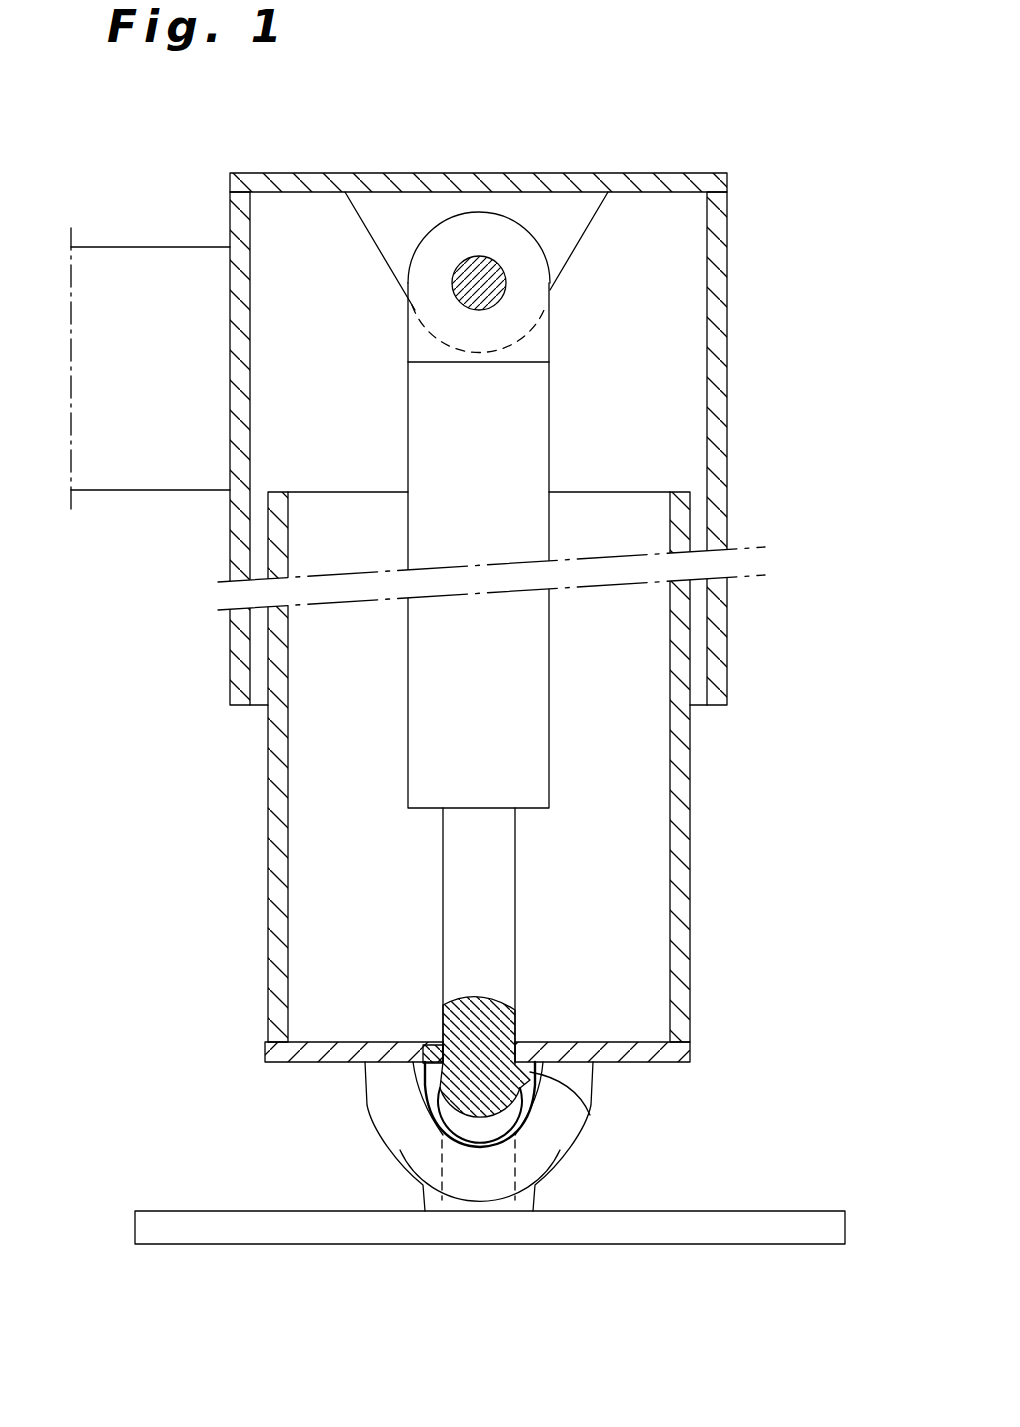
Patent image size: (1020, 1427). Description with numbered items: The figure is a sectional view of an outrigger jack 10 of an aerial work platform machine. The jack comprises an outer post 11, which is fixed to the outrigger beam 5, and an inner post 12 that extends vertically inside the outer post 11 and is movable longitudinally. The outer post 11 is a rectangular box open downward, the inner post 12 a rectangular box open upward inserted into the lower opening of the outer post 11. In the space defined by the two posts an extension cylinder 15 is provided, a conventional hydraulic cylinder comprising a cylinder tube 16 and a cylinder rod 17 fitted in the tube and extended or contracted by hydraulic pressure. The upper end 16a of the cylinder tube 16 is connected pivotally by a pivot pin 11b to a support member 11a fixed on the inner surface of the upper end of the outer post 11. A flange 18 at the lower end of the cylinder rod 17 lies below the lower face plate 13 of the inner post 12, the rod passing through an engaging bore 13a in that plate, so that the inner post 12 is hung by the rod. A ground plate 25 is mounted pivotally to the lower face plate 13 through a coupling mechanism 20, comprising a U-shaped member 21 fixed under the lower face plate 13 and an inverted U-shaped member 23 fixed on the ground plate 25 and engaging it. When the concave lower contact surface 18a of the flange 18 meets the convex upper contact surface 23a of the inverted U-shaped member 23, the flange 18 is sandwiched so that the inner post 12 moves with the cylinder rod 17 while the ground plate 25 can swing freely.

The outrigger beam 5 is at (147, 273).
The outrigger jack 10 is at (530, 602).
The outer post 11 is at (727, 362).
The support member 11a is at (562, 240).
The pivot pin 11b is at (503, 283).
The inner post 12 is at (690, 853).
The lower face plate 13 is at (665, 1055).
The engaging bore 13a is at (450, 1040).
The extension cylinder 15 is at (471, 589).
The cylinder tube 16 is at (528, 713).
The upper end of the cylinder tube 16a is at (478, 226).
The cylinder rod 17 is at (498, 893).
The flange 18 is at (503, 1107).
The lower contact surface 18a is at (433, 1122).
The coupling mechanism 20 is at (360, 1103).
The U-shaped member 21 is at (558, 1150).
The inverted U-shaped member 23 is at (548, 1128).
The upper contact surface 23a is at (513, 1030).
The ground plate 25 is at (750, 1212).